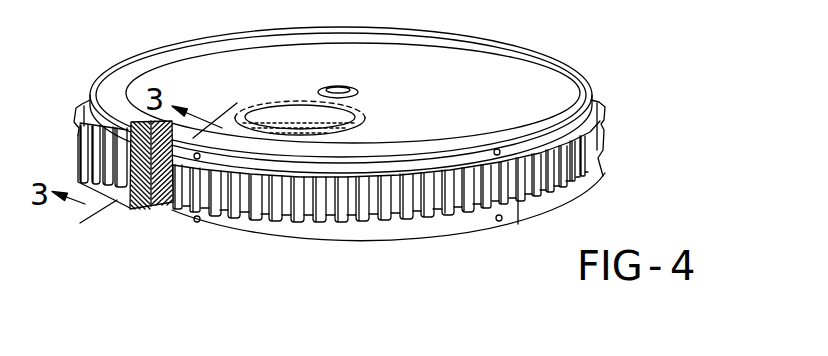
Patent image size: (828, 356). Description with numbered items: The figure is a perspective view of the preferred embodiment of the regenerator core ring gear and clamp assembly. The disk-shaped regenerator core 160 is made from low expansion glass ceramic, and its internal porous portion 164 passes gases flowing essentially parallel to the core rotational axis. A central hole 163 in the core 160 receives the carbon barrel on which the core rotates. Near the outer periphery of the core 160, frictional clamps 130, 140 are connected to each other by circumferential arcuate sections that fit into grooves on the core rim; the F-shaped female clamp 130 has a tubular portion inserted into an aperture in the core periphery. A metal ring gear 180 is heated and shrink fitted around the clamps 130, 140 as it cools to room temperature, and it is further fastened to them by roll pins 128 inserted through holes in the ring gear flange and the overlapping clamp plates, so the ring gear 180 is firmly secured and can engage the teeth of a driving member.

The roll pins 128 is at (500, 152).
The F-shaped female clamp 130 is at (98, 193).
The frictional clamp 140 is at (89, 96).
The regenerator core 160 is at (530, 95).
The central hole 163 is at (345, 82).
The porous portion 164 is at (262, 107).
The ring gear 180 is at (76, 117).